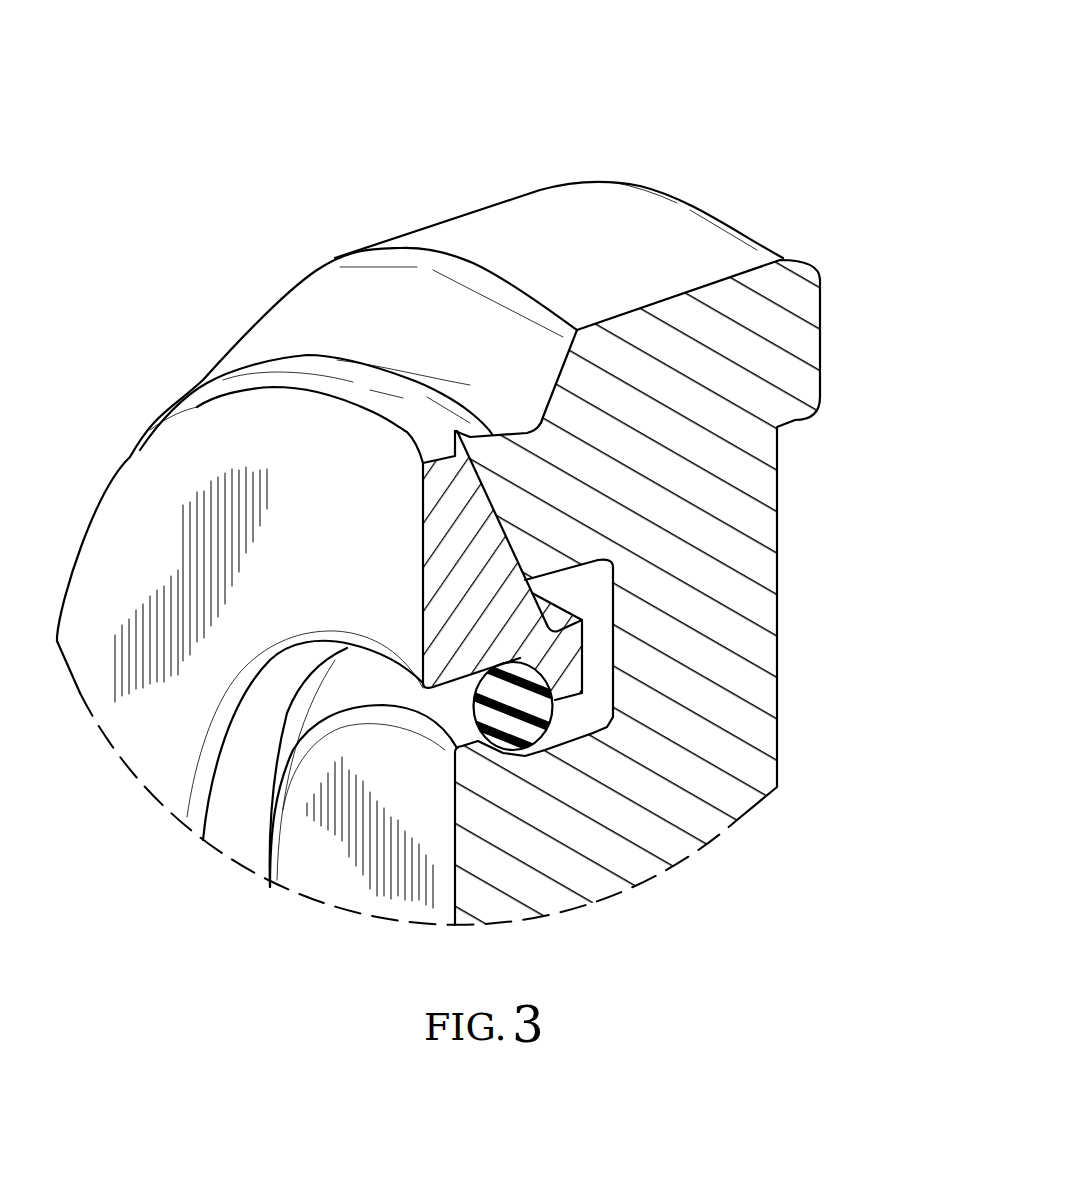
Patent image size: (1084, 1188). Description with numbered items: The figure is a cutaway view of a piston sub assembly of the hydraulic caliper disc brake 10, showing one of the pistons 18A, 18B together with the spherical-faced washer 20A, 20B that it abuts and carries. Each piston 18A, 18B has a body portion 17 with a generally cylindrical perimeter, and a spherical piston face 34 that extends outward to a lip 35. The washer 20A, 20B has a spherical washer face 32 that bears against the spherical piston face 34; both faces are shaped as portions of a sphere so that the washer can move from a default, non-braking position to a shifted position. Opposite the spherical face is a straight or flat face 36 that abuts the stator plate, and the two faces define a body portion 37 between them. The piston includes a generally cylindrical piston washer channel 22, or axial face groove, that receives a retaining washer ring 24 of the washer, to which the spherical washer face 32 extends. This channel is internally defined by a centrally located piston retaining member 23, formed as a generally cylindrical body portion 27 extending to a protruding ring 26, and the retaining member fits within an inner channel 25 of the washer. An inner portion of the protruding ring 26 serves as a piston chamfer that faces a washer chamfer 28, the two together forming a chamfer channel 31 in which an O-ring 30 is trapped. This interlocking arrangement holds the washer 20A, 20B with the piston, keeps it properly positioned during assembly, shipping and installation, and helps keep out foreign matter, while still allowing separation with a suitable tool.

The brake 10 is at (210, 140).
The body portion 17 is at (681, 516).
The first piston 18A is at (637, 464).
The second piston 18B is at (712, 283).
The spherical-faced washer 20A is at (698, 531).
The spherical-faced washer 20B is at (527, 557).
The piston washer channel 22 is at (681, 591).
The piston retaining member 23 is at (327, 860).
The retaining washer ring 24 is at (570, 640).
The inner channel 25 is at (236, 756).
The protruding ring 26 is at (527, 755).
The body portion 27 is at (583, 787).
The washer chamfer 28 is at (512, 675).
The O-ring 30 is at (483, 715).
The chamfer channel 31 is at (560, 730).
The spherical washer face 32 is at (412, 522).
The spherical piston face 34 is at (500, 538).
The lip 35 is at (467, 441).
The straight face 36 is at (137, 540).
The body portion 37 is at (467, 510).